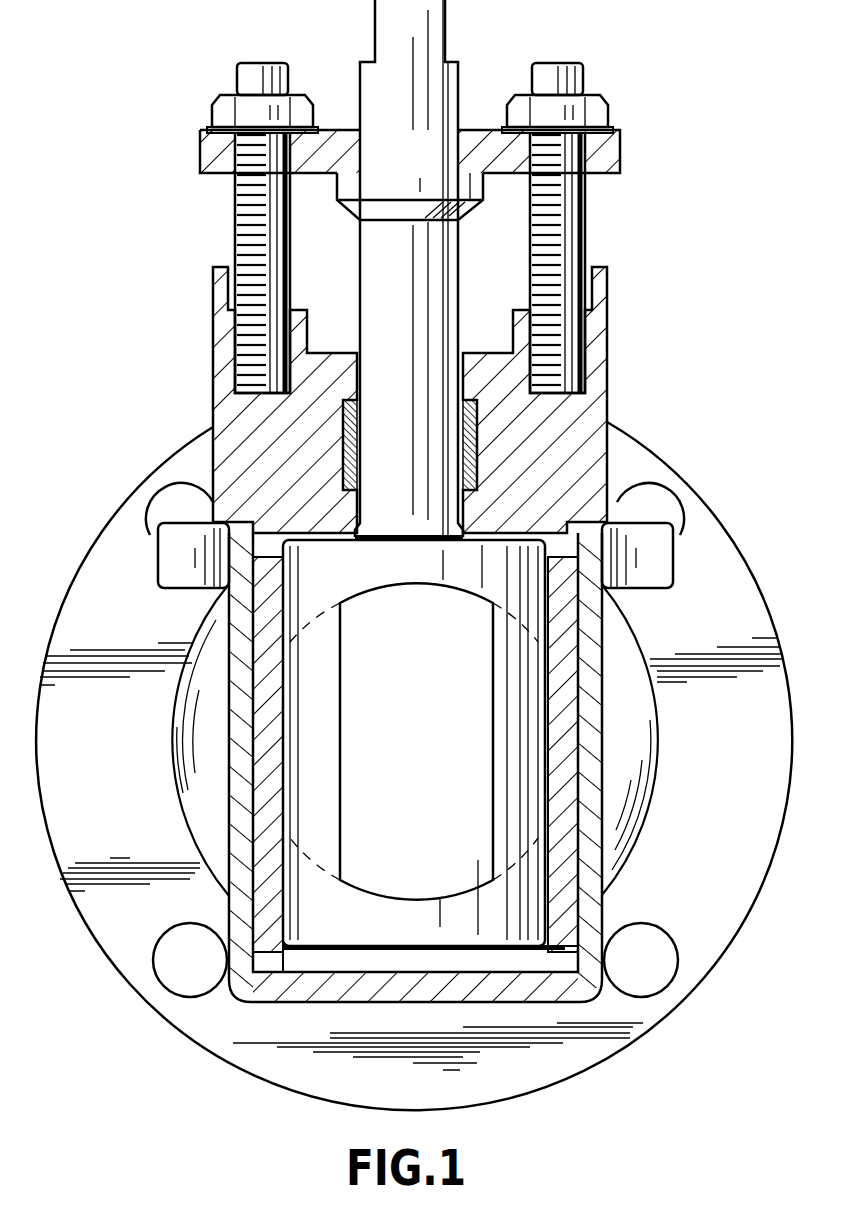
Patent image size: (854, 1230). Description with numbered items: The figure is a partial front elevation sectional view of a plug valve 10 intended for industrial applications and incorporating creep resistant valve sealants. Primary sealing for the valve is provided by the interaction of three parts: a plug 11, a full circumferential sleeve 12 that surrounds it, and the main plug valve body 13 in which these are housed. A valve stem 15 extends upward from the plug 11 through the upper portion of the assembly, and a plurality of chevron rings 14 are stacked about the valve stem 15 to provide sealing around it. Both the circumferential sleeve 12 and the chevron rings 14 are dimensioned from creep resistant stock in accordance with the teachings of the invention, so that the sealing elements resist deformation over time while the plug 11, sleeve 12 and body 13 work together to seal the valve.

The plug valve 10 is at (672, 207).
The plug 11 is at (313, 925).
The full circumferential sleeve 12 is at (243, 993).
The main plug valve body 13 is at (568, 990).
The chevron rings 14 is at (347, 412).
The valve stem 15 is at (368, 255).